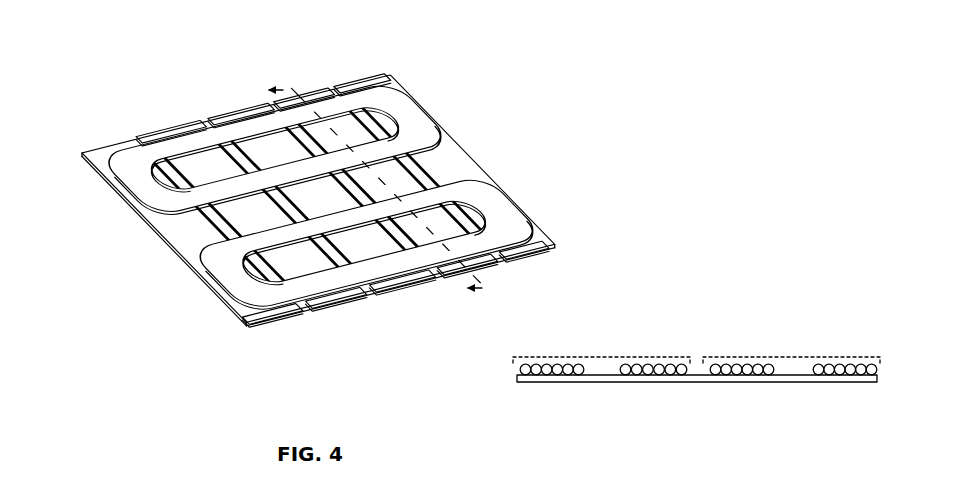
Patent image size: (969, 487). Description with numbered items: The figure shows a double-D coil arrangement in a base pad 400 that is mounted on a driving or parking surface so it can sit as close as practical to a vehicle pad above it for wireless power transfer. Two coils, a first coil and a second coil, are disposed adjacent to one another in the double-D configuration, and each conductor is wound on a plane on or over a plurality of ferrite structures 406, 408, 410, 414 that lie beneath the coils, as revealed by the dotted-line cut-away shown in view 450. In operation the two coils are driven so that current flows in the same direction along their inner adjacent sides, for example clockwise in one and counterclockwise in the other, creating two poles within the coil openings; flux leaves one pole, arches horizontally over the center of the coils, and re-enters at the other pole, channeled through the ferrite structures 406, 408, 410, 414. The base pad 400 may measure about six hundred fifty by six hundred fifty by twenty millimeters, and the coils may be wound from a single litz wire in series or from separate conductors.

The base pad 400 is at (134, 71).
The ferrite structure 406 is at (267, 325).
The ferrite structure 408 is at (340, 305).
The ferrite structure 410 is at (403, 287).
The ferrite structure 414 is at (533, 242).
The view 450 is at (757, 296).